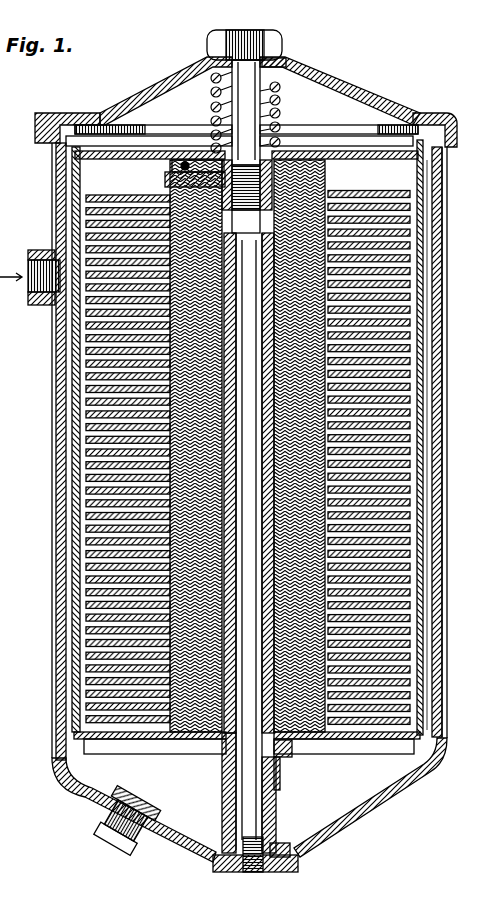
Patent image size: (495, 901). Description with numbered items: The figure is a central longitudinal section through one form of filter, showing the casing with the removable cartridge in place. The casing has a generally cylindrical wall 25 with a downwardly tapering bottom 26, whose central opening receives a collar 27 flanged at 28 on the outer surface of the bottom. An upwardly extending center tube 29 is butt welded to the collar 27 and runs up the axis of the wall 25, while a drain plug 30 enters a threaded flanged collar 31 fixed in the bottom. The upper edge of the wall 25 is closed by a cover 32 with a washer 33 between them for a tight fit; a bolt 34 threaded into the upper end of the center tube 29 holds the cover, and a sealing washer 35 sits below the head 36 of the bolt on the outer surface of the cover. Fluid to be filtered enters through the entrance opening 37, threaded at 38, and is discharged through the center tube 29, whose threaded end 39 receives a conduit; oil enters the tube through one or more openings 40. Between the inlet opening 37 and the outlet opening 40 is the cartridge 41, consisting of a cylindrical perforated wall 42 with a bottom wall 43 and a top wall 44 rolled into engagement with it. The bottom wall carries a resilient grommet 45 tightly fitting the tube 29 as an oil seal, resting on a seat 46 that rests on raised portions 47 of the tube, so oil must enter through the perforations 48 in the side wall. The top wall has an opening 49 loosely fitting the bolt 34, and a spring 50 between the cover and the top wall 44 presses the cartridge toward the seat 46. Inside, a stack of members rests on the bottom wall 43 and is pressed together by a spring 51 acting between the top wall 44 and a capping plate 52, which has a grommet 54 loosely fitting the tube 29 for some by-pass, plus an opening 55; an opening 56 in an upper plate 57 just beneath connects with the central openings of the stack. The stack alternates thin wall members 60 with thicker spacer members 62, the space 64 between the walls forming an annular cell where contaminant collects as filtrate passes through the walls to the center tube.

The cylindrical wall 25 is at (62, 722).
The downwardly tapering bottom 26 is at (400, 798).
The collar 27 is at (281, 838).
The flange 28 is at (280, 872).
The center tube 29 is at (232, 804).
The drain plug 30 is at (143, 840).
The flanged collar 31 is at (180, 838).
The cover 32 is at (345, 110).
The washer 33 is at (426, 130).
The bolt 34 is at (279, 64).
The sealing washer 35 is at (206, 56).
The head 36 is at (254, 30).
The entrance opening 37 is at (43, 303).
The threads 38 is at (28, 267).
The threaded end 39 is at (250, 872).
The openings 40 is at (263, 292).
The cartridge 41 is at (430, 486).
The cylindrical perforated wall 42 is at (427, 543).
The bottom wall 43 is at (360, 740).
The top wall 44 is at (400, 158).
The resilient grommet 45 is at (217, 760).
The seat 46 is at (282, 770).
The raised portions 47 is at (281, 788).
The perforations 48 is at (425, 425).
The opening 49 is at (278, 152).
The spring 50 is at (282, 101).
The spring 51 is at (183, 163).
The capping plate 52 is at (312, 194).
The grommet 54 is at (314, 157).
The opening 55 is at (176, 182).
The opening 56 is at (173, 190).
The upper plate 57 is at (120, 197).
The wall member 60 is at (400, 223).
The spacer member 62 is at (340, 200).
The space 64 is at (410, 670).